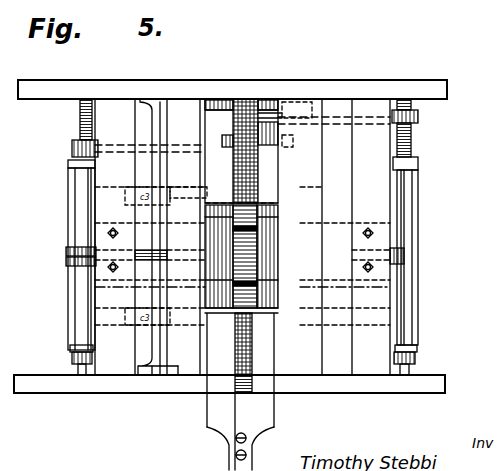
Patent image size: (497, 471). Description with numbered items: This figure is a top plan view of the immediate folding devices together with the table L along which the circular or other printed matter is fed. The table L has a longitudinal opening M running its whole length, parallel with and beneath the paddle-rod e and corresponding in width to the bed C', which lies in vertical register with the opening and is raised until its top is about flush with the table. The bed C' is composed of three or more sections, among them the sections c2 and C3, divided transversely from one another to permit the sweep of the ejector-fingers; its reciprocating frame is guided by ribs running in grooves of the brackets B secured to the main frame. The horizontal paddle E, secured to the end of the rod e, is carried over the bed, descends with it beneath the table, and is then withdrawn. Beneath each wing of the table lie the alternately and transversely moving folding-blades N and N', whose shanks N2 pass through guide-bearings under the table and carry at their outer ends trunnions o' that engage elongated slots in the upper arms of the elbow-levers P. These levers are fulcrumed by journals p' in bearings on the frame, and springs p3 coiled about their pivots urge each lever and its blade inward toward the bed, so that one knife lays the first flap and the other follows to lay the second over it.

The elbow-lever P is at (80, 212).
The spring p3 is at (446, 118).
The journal p' is at (249, 242).
The trunnion o' is at (221, 250).
The table L is at (360, 160).
The longitudinal opening M is at (243, 151).
The bracket B is at (246, 177).
The bed section C3 is at (250, 212).
The folding-blade N' is at (252, 255).
The bed C' is at (270, 299).
The bed section c2 is at (296, 139).
The folding-blade N is at (242, 267).
The shank N2 is at (342, 253).
The paddle E is at (222, 416).
The paddle-rod e is at (229, 456).